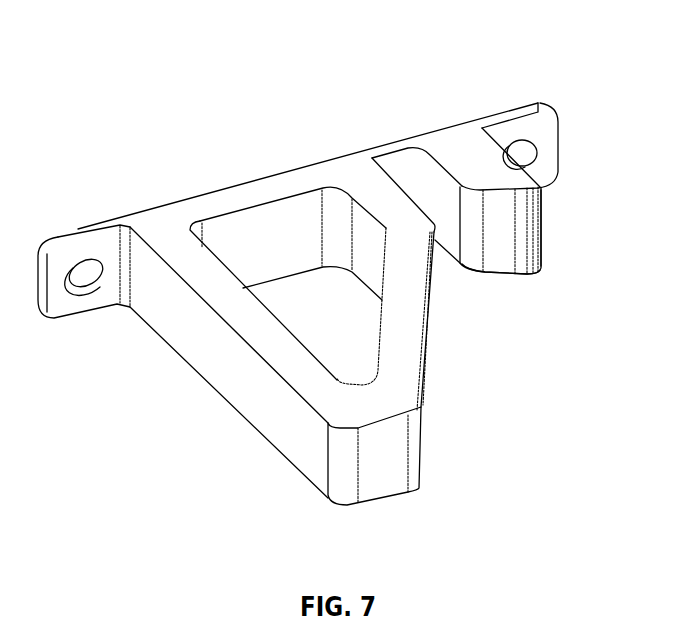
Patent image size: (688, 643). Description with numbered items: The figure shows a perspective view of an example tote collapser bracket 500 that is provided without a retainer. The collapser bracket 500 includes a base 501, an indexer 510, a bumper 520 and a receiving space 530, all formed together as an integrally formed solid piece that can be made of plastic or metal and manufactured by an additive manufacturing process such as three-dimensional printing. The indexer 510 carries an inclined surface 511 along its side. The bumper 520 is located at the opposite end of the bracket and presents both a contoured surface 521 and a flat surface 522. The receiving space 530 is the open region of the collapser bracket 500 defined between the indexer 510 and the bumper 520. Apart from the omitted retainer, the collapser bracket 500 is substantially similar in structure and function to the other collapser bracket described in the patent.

The tote collapser bracket 500 is at (384, 106).
The base 501 is at (77, 231).
The indexer 510 is at (432, 507).
The inclined surface 511 is at (424, 415).
The bumper 520 is at (554, 289).
The contoured surface 521 is at (507, 277).
The flat surface 522 is at (541, 232).
The receiving space 530 is at (456, 298).